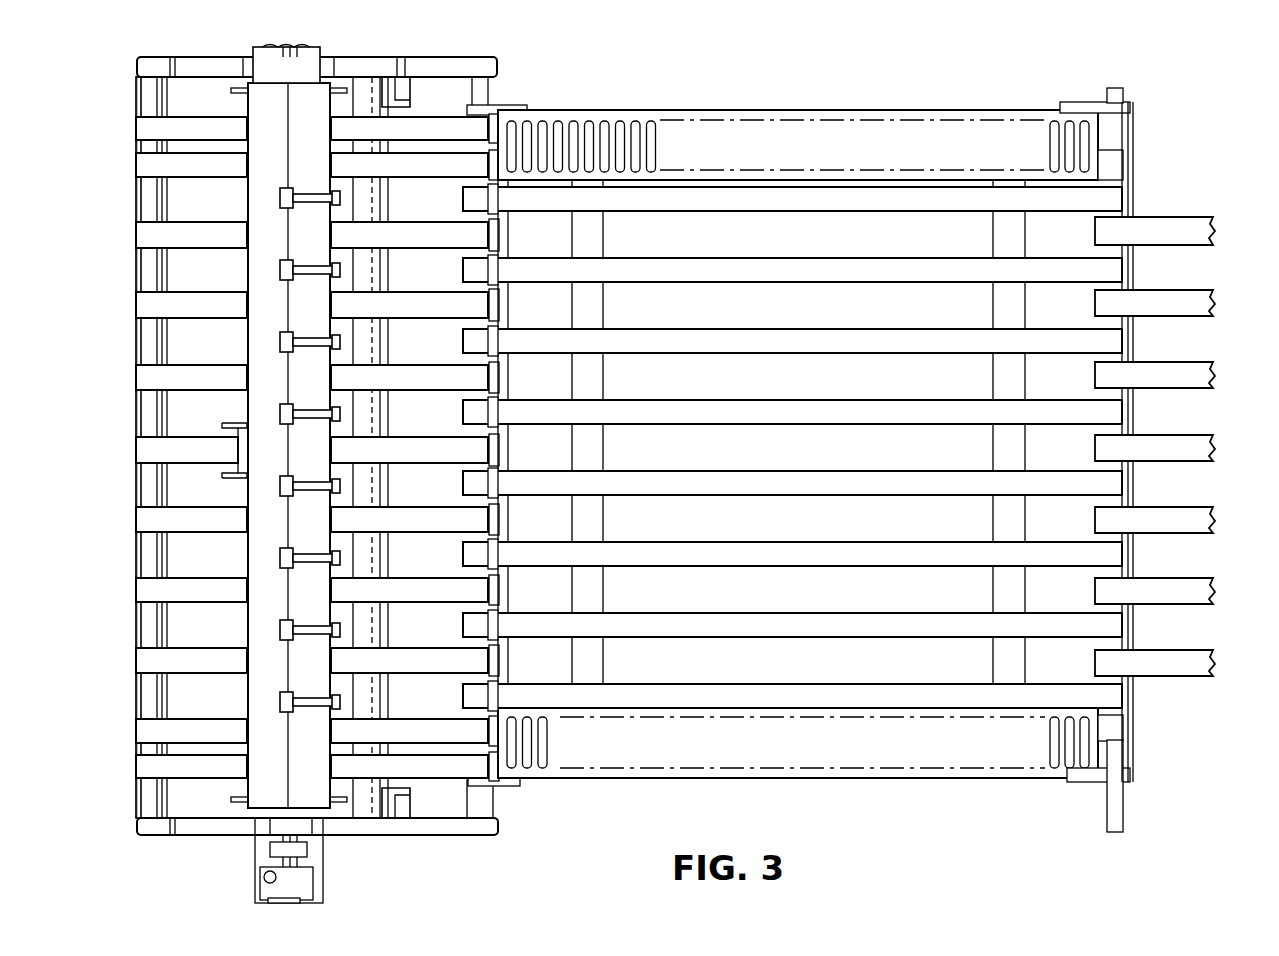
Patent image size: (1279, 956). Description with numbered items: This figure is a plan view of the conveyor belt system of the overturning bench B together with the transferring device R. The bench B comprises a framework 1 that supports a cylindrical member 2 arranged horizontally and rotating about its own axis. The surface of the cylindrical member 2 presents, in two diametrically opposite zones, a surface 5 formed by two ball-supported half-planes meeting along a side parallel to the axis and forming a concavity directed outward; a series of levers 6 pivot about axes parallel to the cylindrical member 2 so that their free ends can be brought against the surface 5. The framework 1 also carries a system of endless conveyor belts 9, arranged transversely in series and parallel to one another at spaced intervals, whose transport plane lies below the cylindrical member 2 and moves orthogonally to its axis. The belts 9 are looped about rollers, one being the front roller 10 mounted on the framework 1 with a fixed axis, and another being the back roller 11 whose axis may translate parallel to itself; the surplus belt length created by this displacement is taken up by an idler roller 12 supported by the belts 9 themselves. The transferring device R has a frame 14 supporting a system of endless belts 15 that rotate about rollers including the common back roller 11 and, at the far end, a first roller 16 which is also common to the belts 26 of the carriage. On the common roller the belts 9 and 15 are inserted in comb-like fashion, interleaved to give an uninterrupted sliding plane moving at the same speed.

The framework 1 is at (498, 70).
The cylindrical member 2 is at (250, 626).
The surface 5 is at (266, 561).
The levers 6 is at (281, 200).
The conveyor belts 9 is at (142, 233).
The front roller 10 is at (146, 348).
The back roller 11 is at (506, 354).
The idler roller 12 is at (384, 555).
The frame 14 is at (1006, 443).
The endless belts 15 is at (823, 270).
The first roller 16 is at (1130, 214).
The belts 26 is at (1196, 310).
The overturning bench B is at (122, 192).
The transferring device R is at (773, 100).